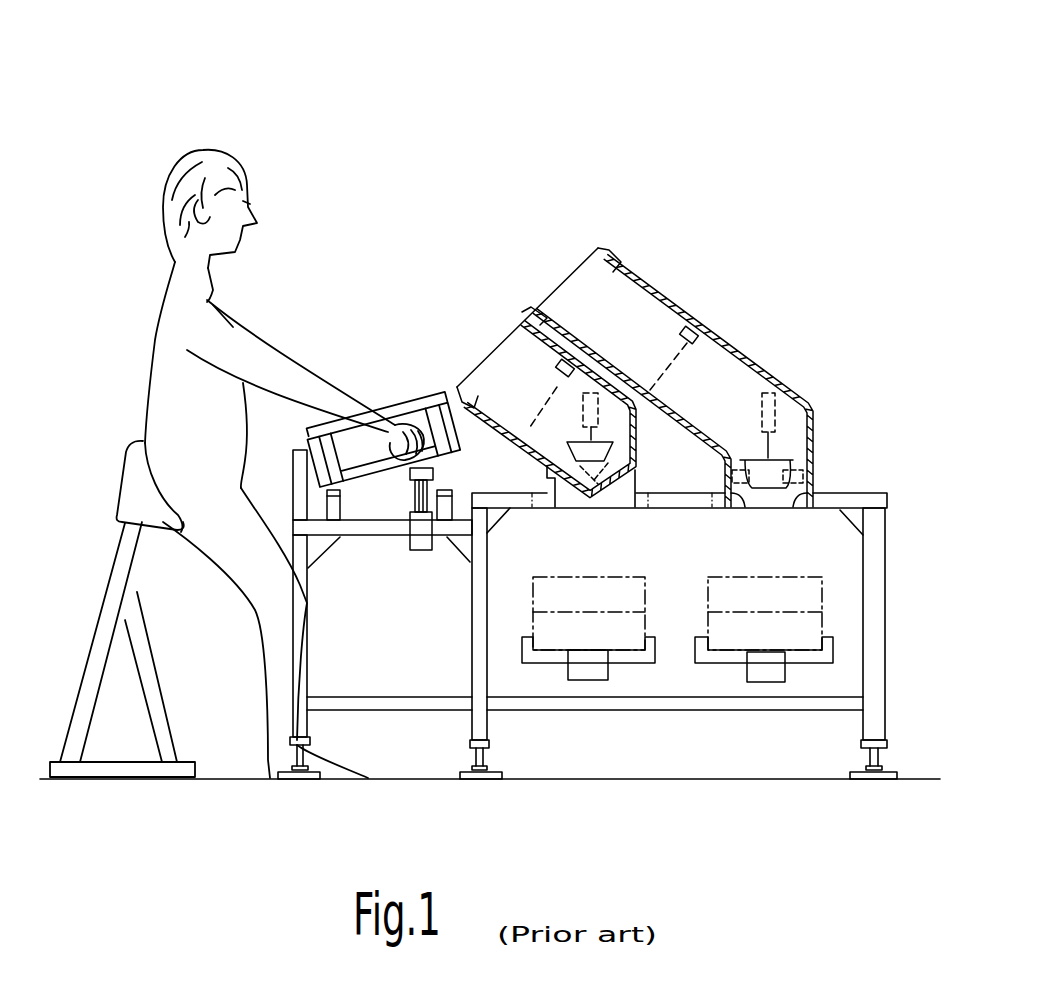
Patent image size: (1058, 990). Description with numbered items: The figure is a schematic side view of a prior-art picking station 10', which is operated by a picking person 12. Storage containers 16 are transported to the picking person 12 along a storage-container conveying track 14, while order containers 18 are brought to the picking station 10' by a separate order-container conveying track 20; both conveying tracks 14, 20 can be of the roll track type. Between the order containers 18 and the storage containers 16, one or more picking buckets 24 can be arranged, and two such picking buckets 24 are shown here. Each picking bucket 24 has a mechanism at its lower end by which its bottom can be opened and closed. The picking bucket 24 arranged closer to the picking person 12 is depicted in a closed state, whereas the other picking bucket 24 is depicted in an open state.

The picking station 10' is at (596, 389).
The picking person 12 is at (177, 313).
The storage-container conveying track 14 is at (413, 480).
The storage containers 16 is at (312, 441).
The order containers 18 is at (632, 598).
The order-container conveying track 20 is at (587, 665).
The picking buckets 24 is at (513, 367).